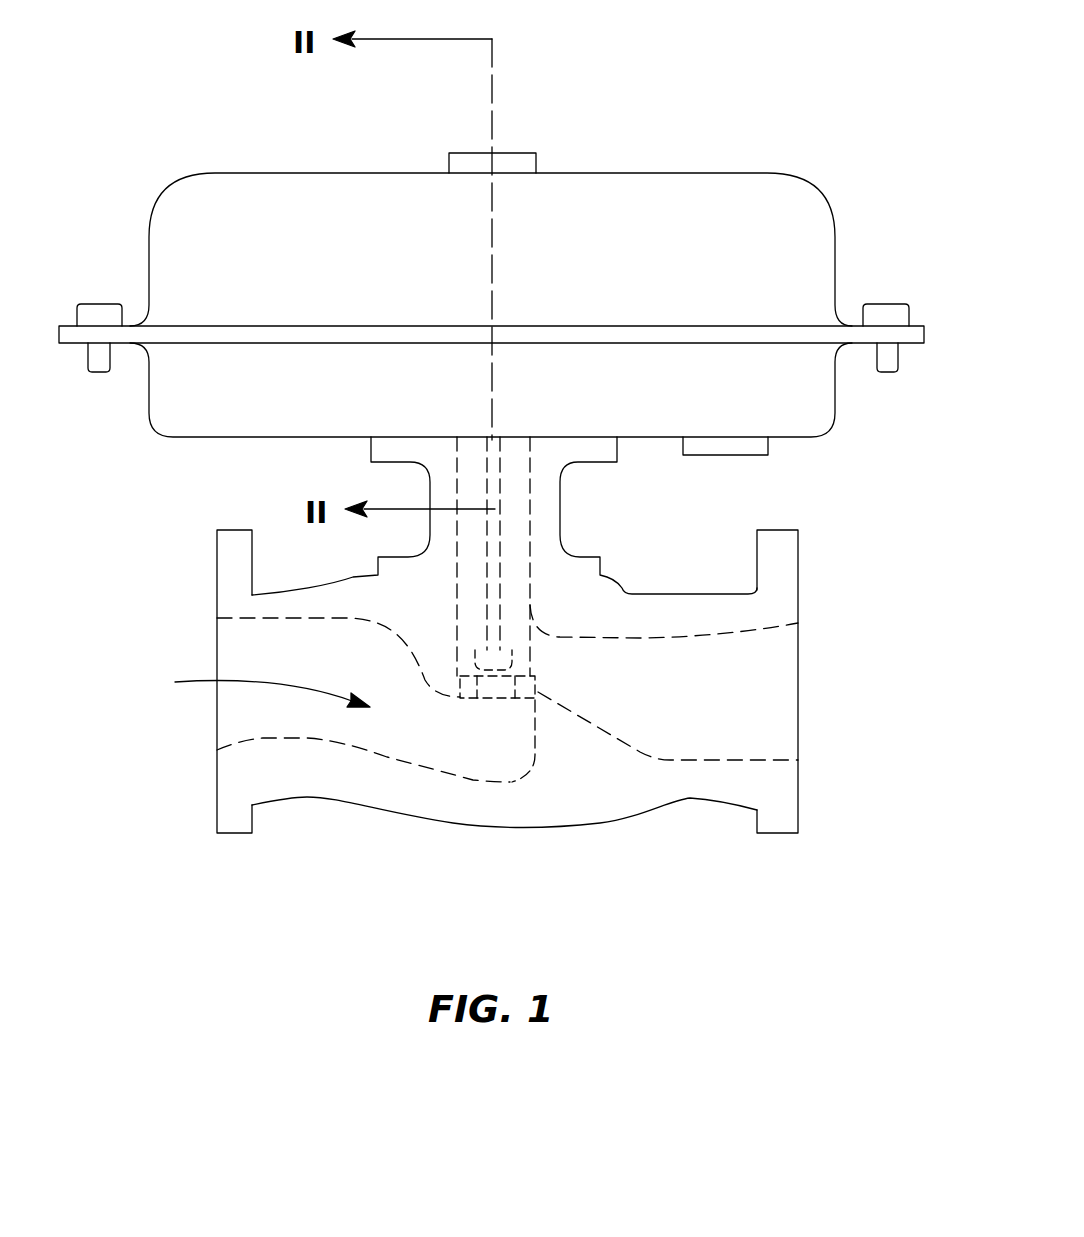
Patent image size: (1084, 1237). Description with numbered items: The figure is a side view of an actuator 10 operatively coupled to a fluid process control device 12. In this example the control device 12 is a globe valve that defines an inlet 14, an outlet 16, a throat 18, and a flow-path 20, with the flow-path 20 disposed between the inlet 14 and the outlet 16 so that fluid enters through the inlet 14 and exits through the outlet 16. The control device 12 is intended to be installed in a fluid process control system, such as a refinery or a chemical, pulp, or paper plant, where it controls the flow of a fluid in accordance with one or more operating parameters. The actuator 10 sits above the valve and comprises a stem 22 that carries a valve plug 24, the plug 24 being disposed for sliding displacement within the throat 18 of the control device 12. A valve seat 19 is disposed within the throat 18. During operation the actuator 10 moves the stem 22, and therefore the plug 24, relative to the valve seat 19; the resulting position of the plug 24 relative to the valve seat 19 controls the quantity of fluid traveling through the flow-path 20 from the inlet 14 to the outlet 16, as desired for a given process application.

The actuator 10 is at (711, 156).
The fluid process control device 12 is at (792, 512).
The inlet 14 is at (227, 719).
The outlet 16 is at (778, 738).
The throat 18 is at (533, 703).
The valve seat 19 is at (465, 699).
The flow-path 20 is at (200, 680).
The stem 22 is at (500, 537).
The valve plug 24 is at (513, 654).